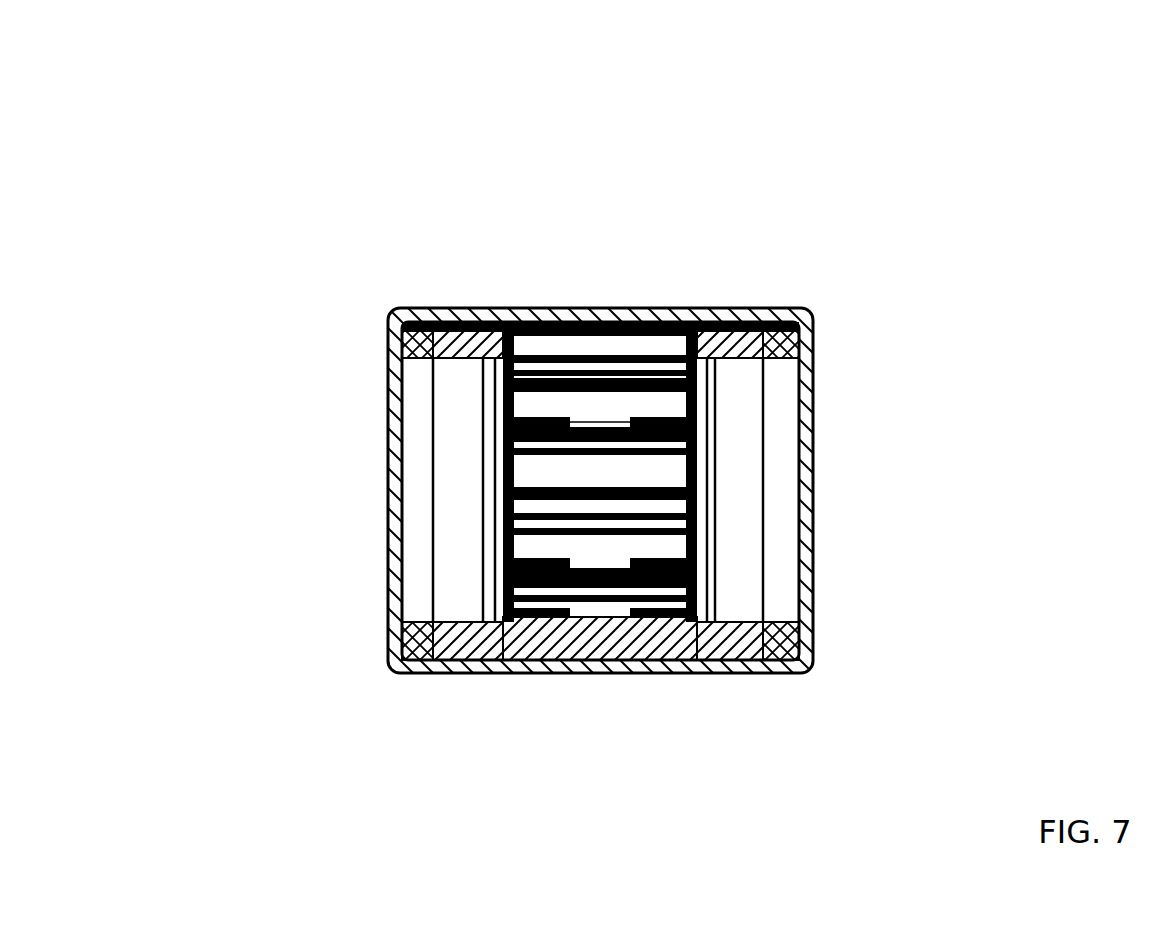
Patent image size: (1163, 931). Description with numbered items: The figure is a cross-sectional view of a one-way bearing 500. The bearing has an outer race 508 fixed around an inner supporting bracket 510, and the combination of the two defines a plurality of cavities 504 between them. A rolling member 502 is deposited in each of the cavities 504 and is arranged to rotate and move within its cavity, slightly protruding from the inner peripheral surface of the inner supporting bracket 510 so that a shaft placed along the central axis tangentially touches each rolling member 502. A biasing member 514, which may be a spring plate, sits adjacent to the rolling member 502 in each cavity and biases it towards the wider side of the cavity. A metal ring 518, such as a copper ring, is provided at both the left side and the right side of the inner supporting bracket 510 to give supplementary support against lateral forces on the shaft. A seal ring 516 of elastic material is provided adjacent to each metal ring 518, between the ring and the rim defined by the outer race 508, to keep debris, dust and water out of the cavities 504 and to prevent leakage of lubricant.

The one-way bearing 500 is at (972, 99).
The rolling member 502 is at (656, 648).
The cavities 504 is at (535, 553).
The outer race 508 is at (492, 312).
The inner supporting bracket 510 is at (695, 312).
The biasing member 514 is at (600, 576).
The seal ring 516 is at (787, 312).
The metal ring 518 is at (745, 312).